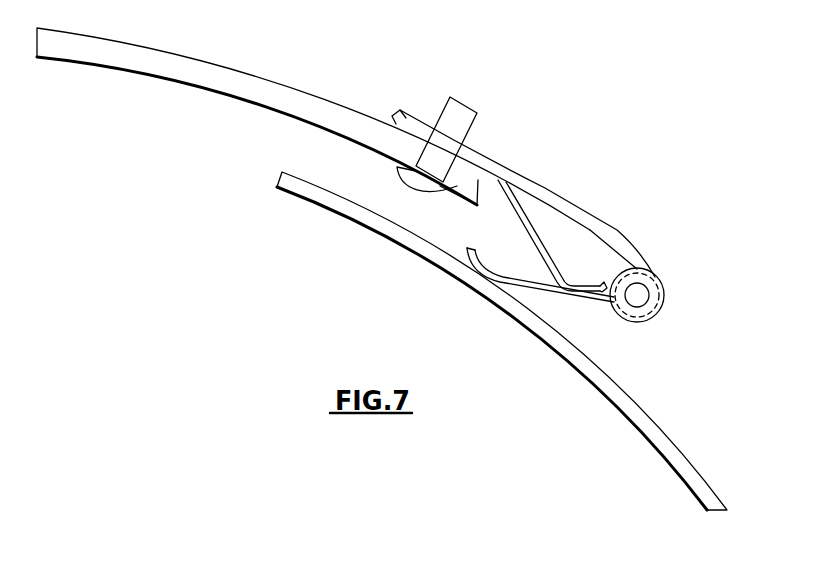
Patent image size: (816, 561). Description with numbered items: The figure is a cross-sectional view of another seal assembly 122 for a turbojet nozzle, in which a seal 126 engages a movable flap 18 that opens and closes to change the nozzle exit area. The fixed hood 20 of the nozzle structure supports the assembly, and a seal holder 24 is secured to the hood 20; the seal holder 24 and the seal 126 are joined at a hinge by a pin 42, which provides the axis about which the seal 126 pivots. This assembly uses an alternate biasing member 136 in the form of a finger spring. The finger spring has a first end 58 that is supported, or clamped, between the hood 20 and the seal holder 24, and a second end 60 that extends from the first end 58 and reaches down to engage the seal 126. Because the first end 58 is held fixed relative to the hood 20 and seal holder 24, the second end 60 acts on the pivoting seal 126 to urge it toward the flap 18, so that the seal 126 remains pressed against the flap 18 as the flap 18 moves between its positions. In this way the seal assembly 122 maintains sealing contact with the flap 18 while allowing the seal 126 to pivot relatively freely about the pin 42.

The movable flap 18 is at (652, 430).
The hood 20 is at (272, 84).
The seal holder 24 is at (595, 223).
The pin 42 is at (640, 295).
The first end 58 is at (470, 160).
The second end 60 is at (592, 289).
The seal assembly 122 is at (693, 312).
The seal 126 is at (595, 302).
The biasing member 136 is at (522, 208).